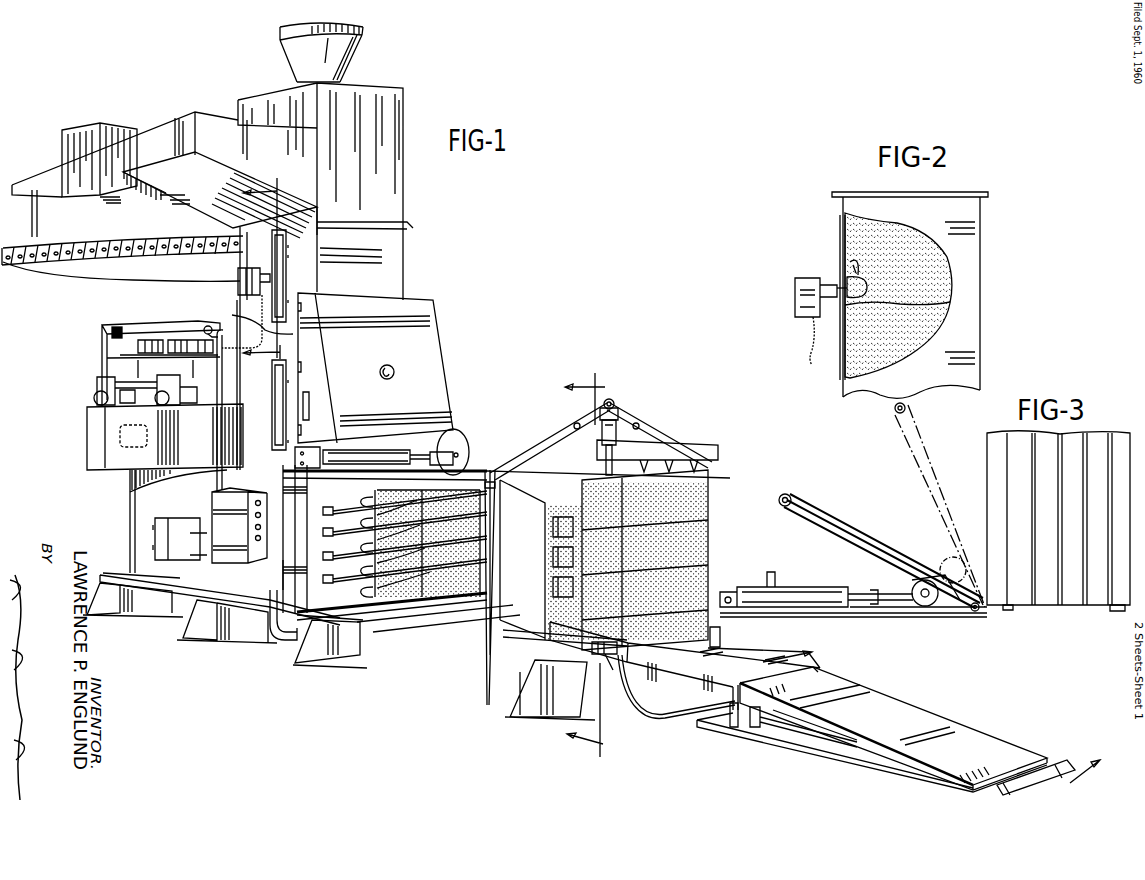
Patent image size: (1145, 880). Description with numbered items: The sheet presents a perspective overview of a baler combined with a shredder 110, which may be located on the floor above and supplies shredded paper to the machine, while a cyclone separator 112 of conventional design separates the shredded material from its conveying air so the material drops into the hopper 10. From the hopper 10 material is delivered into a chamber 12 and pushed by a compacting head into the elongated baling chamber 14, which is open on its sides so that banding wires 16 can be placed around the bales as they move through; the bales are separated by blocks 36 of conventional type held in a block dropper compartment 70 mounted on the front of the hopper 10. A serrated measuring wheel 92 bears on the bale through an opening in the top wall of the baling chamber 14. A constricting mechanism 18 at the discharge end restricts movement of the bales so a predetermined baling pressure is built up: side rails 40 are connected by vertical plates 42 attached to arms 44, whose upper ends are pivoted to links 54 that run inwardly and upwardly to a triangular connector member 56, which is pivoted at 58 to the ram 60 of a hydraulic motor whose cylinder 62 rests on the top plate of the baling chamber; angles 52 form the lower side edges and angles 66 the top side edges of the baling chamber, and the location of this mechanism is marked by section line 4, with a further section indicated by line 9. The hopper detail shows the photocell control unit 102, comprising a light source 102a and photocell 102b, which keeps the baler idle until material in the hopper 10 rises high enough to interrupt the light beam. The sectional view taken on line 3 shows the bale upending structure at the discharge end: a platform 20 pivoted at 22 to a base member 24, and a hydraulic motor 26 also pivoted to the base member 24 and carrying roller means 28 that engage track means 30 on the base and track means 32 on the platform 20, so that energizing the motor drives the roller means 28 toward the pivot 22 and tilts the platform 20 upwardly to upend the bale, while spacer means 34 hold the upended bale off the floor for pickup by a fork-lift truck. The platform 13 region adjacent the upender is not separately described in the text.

In FIG. 1, the section line 3— 3 is at (934, 710).
In FIG. 1, the section line 4— 4 is at (594, 565).
In FIG. 1, the section line 9— 9 is at (251, 270).
In FIG. 1, the hopper 10 is at (402, 273).
In FIG. 2, the hopper 10 is at (970, 248).
In FIG. 1, the chamber 12 is at (262, 588).
In FIG. 1, the discharge platform 13 is at (745, 647).
In FIG. 1, the baling chamber 14 is at (417, 625).
In FIG. 1, the banding wires 16 is at (417, 617).
In FIG. 1, the constricting mechanism 18 is at (689, 437).
In FIG. 1, the platform 20 is at (897, 702).
In FIG. 3, the platform 20 is at (920, 431).
In FIG. 3, the pivot 22 is at (975, 612).
In FIG. 1, the base member 24 is at (813, 753).
In FIG. 3, the base member 24 is at (912, 615).
In FIG. 1, the hydraulic motor 26 is at (768, 722).
In FIG. 3, the hydraulic motor 26 is at (803, 587).
In FIG. 3, the roller means 28 is at (910, 577).
In FIG. 3, the track means 30 is at (875, 596).
In FIG. 3, the track means 32 is at (797, 513).
In FIG. 1, the spacer means 34 is at (1028, 777).
In FIG. 3, the spacer means 34 is at (1003, 612).
In FIG. 1, the blocks 36 is at (453, 587).
In FIG. 1, the side rails 40 is at (520, 610).
In FIG. 1, the vertical plates 42 is at (500, 620).
In FIG. 1, the arms 44 is at (490, 657).
In FIG. 1, the angles 52 is at (580, 663).
In FIG. 1, the links 54 is at (542, 437).
In FIG. 1, the triangular connector member 56 is at (622, 418).
In FIG. 1, the pivot 58 is at (617, 412).
In FIG. 1, the ram 60 is at (603, 437).
In FIG. 1, the cylinder 62 is at (600, 458).
In FIG. 1, the angles 66 is at (712, 488).
In FIG. 1, the block dropper compartment 70 is at (232, 315).
In FIG. 1, the serrated wheel 92 is at (462, 448).
In FIG. 1, the photocell control unit 102 is at (223, 288).
In FIG. 2, the photocell control unit 102 is at (805, 253).
In FIG. 2, the light source 102a is at (846, 267).
In FIG. 1, the photocell 102b is at (238, 272).
In FIG. 2, the photocell 102b is at (795, 287).
In FIG. 1, the shredder 110 is at (97, 128).
In FIG. 1, the cyclone separator 112 is at (352, 48).